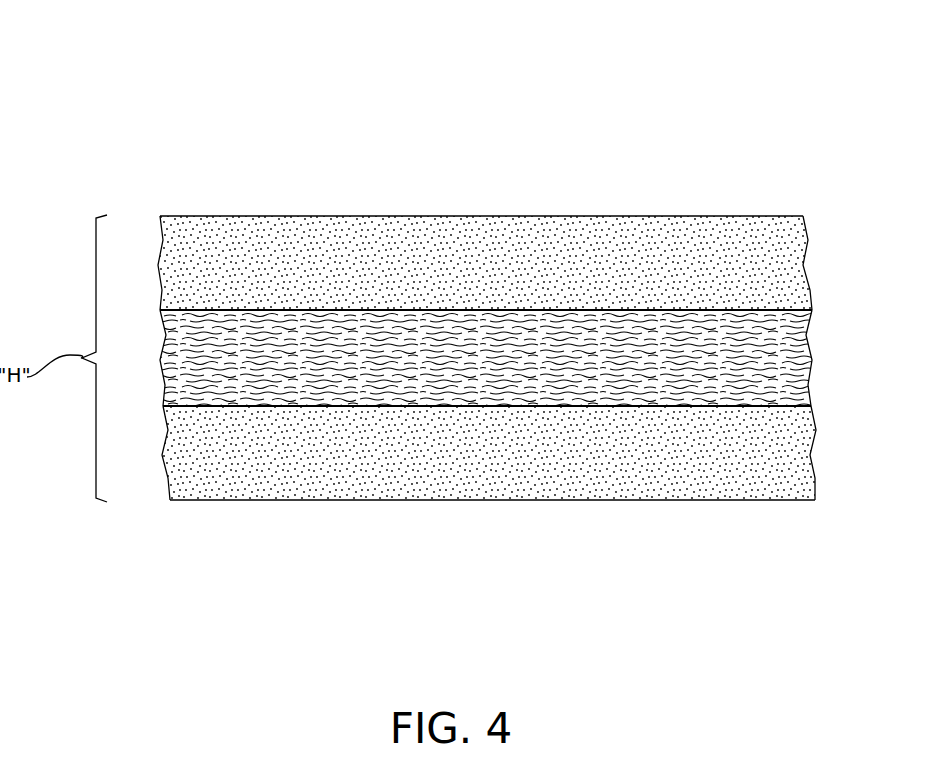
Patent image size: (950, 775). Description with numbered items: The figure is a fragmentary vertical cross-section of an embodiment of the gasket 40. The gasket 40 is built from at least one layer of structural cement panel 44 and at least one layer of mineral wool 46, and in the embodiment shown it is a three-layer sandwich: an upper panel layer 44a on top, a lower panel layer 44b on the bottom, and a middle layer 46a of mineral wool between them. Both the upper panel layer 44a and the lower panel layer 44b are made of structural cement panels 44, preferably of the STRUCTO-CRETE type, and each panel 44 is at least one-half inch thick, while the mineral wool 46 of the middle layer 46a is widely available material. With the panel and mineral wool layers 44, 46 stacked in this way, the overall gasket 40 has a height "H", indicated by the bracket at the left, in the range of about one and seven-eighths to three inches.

The gasket 40 is at (531, 331).
The structural cement panel 44 is at (531, 362).
The upper panel layer 44a is at (792, 256).
The lower panel layer 44b is at (790, 452).
The mineral wool 46 is at (528, 454).
The middle layer 46a is at (804, 340).